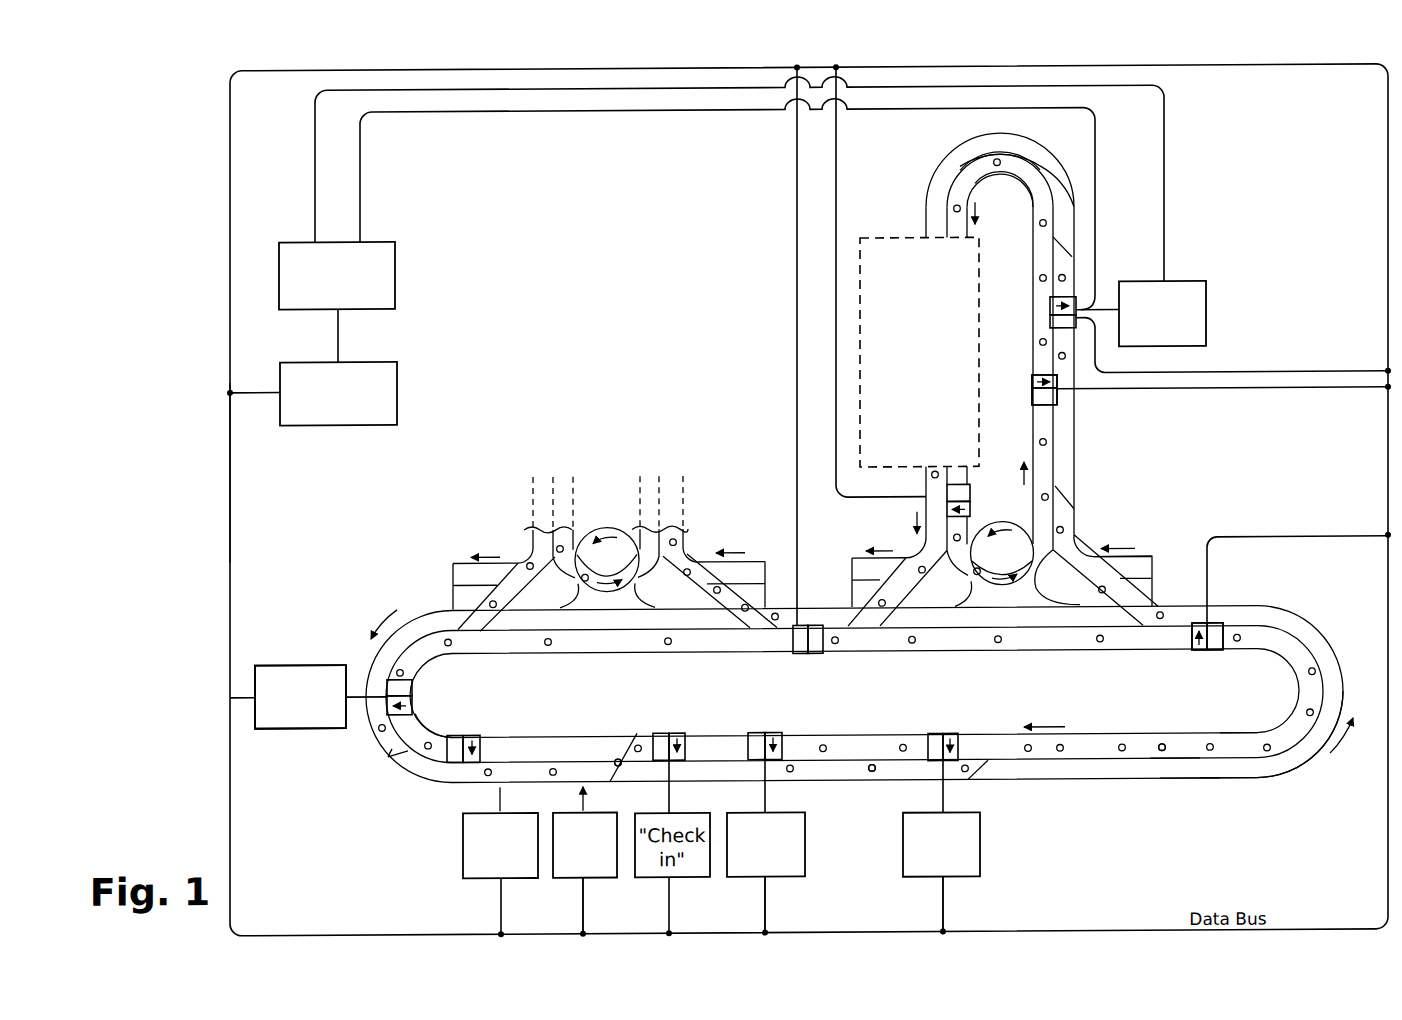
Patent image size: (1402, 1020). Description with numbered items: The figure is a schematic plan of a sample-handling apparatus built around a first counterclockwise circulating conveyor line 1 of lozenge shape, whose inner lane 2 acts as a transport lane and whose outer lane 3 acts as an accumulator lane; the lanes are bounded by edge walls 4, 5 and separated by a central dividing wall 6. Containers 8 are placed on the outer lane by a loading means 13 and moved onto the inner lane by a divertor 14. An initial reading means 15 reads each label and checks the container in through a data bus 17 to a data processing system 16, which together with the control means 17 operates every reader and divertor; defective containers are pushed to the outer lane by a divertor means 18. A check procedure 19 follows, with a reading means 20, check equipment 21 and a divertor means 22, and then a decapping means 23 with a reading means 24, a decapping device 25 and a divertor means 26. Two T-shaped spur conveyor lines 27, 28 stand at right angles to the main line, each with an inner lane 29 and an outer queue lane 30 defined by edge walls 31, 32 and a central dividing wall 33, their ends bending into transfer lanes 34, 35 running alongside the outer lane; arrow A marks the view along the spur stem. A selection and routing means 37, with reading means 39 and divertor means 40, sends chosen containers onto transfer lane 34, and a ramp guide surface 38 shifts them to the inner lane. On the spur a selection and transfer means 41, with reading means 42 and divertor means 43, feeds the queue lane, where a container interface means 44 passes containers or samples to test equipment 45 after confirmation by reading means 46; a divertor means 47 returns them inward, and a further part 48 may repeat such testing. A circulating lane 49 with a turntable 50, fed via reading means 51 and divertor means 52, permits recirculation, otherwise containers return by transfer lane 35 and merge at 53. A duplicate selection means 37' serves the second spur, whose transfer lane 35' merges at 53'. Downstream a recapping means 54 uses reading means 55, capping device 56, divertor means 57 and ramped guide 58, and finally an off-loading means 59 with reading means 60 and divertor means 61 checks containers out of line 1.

The first conveyor line 1 is at (1260, 784).
The inner lane 2 is at (1182, 749).
The outer lane 3 is at (1185, 784).
The edge wall 4 is at (1248, 735).
The edge wall 5 is at (1218, 784).
The central dividing wall 6 is at (1288, 757).
The container 8 is at (871, 774).
The loading means 13 is at (578, 884).
The divertor 14 is at (606, 764).
The initial reading means 15 is at (655, 731).
The data processing system 16 is at (400, 271).
The data bus / control means 17 is at (399, 385).
The divertor means 18 is at (686, 731).
The check procedure station 19 is at (732, 884).
The reading means 20 is at (748, 731).
The check equipment 21 is at (808, 843).
The divertor means 22 is at (782, 731).
The decapping means 23 is at (1013, 863).
The reading means 24 is at (930, 733).
The decapping device 25 is at (984, 833).
The divertor means 26 is at (950, 733).
The spur conveyor line 27 is at (931, 160).
The spur conveyor line 28 is at (657, 452).
The inner lane 29 is at (1031, 181).
The outer lane 30 is at (1037, 152).
The edge wall 31 is at (1000, 178).
The edge wall 32 is at (1026, 131).
The central dividing wall 33 is at (976, 153).
The transfer lane 34 is at (1147, 557).
The transfer lane 35 is at (860, 569).
The transfer lane 35' is at (597, 556).
The selection and routing means 37 is at (1207, 667).
The selection and routing means 37' is at (810, 661).
The ramp guide surface 38 is at (1064, 491).
The reading means 39 is at (1222, 656).
The divertor means 40 is at (1193, 656).
The selection and transfer means 41 is at (1018, 391).
The reading means 42 is at (1030, 404).
The divertor means 43 is at (1030, 380).
The container interface means 44 is at (1047, 305).
The test equipment 45 is at (1209, 302).
The reading means 46 is at (1047, 324).
The divertor means 47 is at (1055, 251).
The further part of the spur 48 is at (919, 352).
The circulating lane 49 is at (982, 592).
The turntable 50 is at (1003, 521).
The reading means 51 is at (972, 484).
The divertor means 52 is at (972, 507).
The merge point 53 is at (897, 615).
The merge point 53' is at (506, 620).
The recapping means 54 is at (317, 658).
The reading means 55 is at (414, 686).
The capping device 56 is at (303, 730).
The divertor means 57 is at (414, 706).
The ramped guide 58 is at (397, 758).
The off-loading means 59 is at (459, 836).
The reading means 60 is at (451, 767).
The divertor means 61 is at (473, 732).
The viewing direction arrow A is at (998, 658).